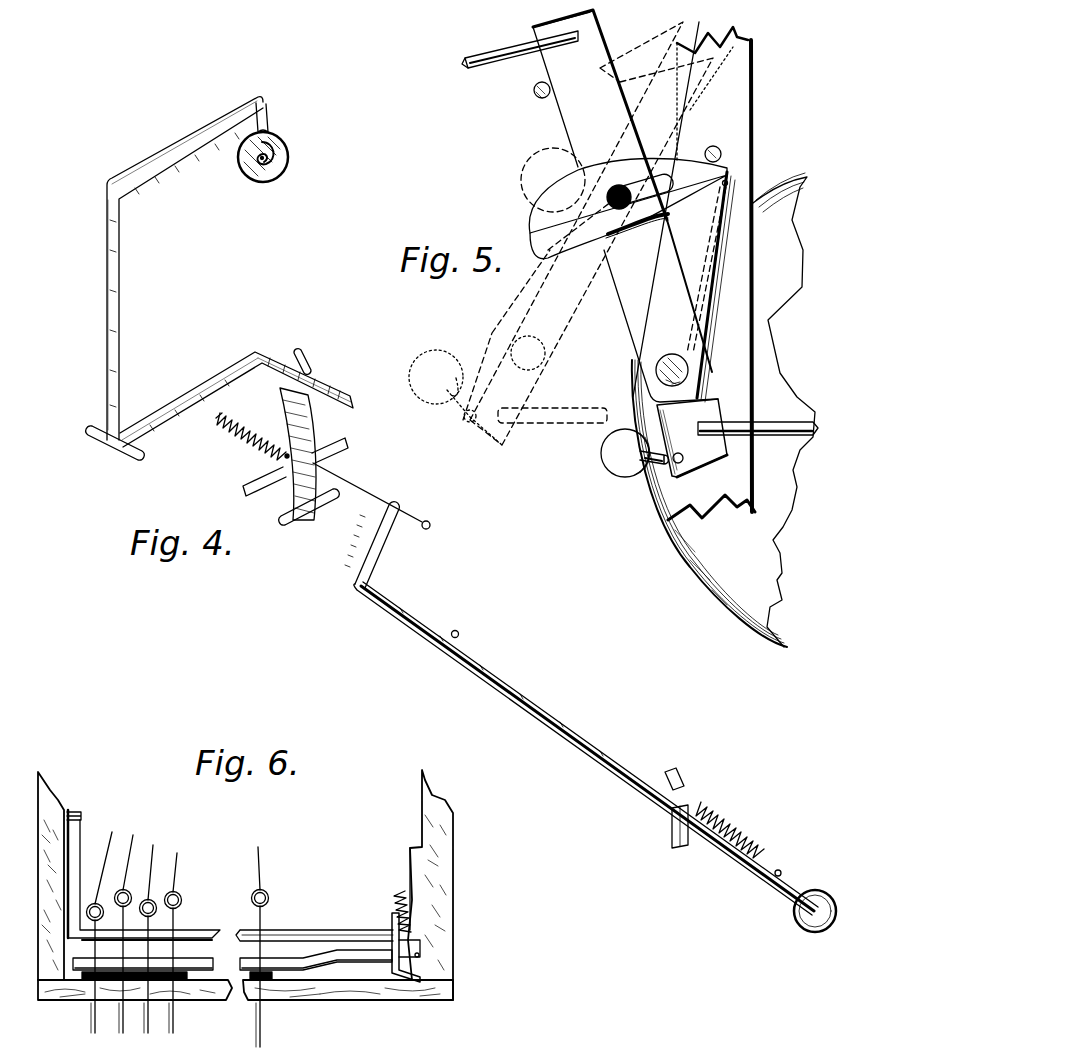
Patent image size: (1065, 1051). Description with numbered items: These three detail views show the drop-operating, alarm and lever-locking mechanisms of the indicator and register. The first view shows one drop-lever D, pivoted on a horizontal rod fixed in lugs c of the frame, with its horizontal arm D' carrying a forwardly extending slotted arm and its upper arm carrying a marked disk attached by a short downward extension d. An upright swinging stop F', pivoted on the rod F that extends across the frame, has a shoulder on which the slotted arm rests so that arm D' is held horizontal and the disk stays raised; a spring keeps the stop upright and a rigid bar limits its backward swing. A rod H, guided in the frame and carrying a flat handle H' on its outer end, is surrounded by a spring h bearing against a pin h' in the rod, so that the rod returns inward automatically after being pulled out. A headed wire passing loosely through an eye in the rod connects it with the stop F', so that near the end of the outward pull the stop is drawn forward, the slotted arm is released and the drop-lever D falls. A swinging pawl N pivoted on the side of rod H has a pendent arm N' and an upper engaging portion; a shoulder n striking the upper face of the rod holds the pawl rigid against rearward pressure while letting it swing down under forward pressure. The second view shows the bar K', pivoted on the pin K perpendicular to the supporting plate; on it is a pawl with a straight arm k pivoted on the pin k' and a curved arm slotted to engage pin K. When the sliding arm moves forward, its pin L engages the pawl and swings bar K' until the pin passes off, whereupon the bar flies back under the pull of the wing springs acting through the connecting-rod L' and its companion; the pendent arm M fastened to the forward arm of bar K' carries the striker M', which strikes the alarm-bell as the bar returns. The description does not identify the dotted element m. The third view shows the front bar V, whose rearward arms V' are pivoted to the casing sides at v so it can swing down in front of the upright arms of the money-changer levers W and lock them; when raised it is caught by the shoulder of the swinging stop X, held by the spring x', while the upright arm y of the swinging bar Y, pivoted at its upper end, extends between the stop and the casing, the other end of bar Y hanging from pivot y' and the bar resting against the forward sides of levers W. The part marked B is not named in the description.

In FIG. 4, the drop-lever D is at (230, 272).
In FIG. 4, the horizontal arm D' is at (190, 397).
In FIG. 4, the downward extension d is at (266, 110).
In FIG. 4, the lug c is at (125, 455).
In FIG. 4, the upright swinging stop F' is at (310, 454).
In FIG. 4, the rod F is at (309, 524).
In FIG. 4, the rod H is at (581, 708).
In FIG. 4, the swinging pawl N is at (699, 765).
In FIG. 4, the shoulder n is at (686, 792).
In FIG. 4, the pendent arm N' is at (664, 826).
In FIG. 4, the pin h' is at (681, 856).
In FIG. 4, the spring h is at (730, 838).
In FIG. 4, the handle H' is at (798, 911).
In FIG. 5, the connecting-rod L' is at (520, 49).
In FIG. 5, the pivoted bar K' is at (625, 227).
In FIG. 5, the straight arm k is at (666, 209).
In FIG. 5, the pin K is at (632, 280).
In FIG. 5, the pin L is at (728, 276).
In FIG. 5, the pivot m is at (448, 417).
In FIG. 5, the pin k' is at (591, 380).
In FIG. 5, the striker M' is at (614, 455).
In FIG. 5, the pendent arm M is at (642, 479).
In FIG. 6, the base board B is at (340, 997).
In FIG. 6, the pivot v is at (74, 814).
In FIG. 6, the locking bar V is at (230, 875).
In FIG. 6, the slide-operating lever W is at (180, 920).
In FIG. 6, the swinging bar Y is at (280, 960).
In FIG. 6, the pivot y' is at (45, 957).
In FIG. 6, the upright arm y is at (442, 955).
In FIG. 6, the swinging stop X is at (392, 924).
In FIG. 6, the spring x' is at (397, 904).
In FIG. 6, the pivotal arm V' is at (397, 888).